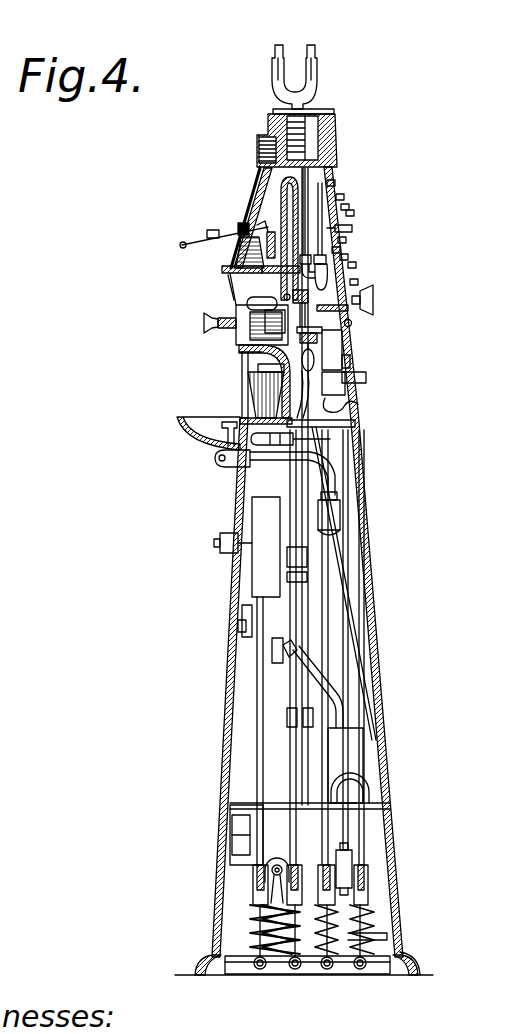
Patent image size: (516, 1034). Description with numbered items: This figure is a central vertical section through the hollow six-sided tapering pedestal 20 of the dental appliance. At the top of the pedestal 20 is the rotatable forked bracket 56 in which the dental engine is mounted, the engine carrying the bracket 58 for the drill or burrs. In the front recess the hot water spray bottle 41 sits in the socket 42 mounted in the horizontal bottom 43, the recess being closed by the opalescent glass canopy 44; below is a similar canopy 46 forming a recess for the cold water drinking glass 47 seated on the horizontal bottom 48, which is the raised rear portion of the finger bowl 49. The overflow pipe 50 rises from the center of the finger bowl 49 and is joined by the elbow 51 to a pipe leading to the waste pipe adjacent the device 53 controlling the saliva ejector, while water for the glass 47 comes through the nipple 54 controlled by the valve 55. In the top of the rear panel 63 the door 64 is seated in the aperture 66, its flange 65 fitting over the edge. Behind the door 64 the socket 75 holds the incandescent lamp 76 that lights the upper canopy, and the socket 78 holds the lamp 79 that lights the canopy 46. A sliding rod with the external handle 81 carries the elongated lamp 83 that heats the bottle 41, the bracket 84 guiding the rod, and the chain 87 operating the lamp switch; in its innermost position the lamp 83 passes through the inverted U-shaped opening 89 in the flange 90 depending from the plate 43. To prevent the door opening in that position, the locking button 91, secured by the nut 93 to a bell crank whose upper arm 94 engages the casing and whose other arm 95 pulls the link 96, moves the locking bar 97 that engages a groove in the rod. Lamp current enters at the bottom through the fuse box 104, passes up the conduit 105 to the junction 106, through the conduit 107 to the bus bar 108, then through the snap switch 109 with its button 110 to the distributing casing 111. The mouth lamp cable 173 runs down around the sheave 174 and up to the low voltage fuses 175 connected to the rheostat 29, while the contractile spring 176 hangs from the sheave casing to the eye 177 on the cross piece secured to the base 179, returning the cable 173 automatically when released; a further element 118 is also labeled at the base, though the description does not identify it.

The pedestal 20 is at (333, 162).
The rheostat 29 is at (228, 534).
The hot water spray bottle 41 is at (242, 247).
The socket 42 is at (237, 264).
The horizontal bottom 43 is at (230, 281).
The opalescent glass canopy 44 is at (282, 192).
The opalescent glass canopy 46 is at (275, 388).
The cold water drinking glass 47 is at (258, 373).
The horizontal bottom 48 is at (242, 404).
The finger bowl 49 is at (180, 430).
The overflow pipe 50 is at (222, 443).
The elbow 51 is at (232, 468).
The saliva ejector controlling device 53 is at (342, 513).
The nipple 54 is at (236, 336).
The valve 55 is at (204, 323).
The forked bracket 56 is at (318, 75).
The bracket 58 is at (320, 470).
The rear panel 63 is at (341, 197).
The door 64 is at (353, 265).
The flange 65 is at (351, 213).
The aperture 66 is at (346, 207).
The socket 75 is at (357, 282).
The incandescent lamp 76 is at (345, 275).
The socket 78 is at (262, 353).
The incandescent lamp 79 is at (300, 359).
The handle 81 is at (361, 294).
The incandescent lamp 83 is at (252, 301).
The bracket 84 is at (350, 312).
The chain 87 is at (352, 324).
The inverted U-shaped opening 89 is at (217, 285).
The flange 90 is at (250, 288).
The locking button 91 is at (352, 228).
The nut 93 is at (328, 228).
The upper arm 94 is at (334, 183).
The arm 95 is at (343, 240).
The link 96 is at (339, 250).
The locking bar 97 is at (344, 257).
The fuse box 104 is at (362, 742).
The conduit 105 is at (336, 700).
The junction 106 is at (283, 652).
The conduit 107 is at (300, 521).
The bus bar 108 is at (358, 402).
The snap switch 109 is at (350, 364).
The button 110 is at (366, 378).
The casing 111 is at (343, 350).
The bolt 118 is at (275, 975).
The cable 173 is at (335, 651).
The sheave 174 is at (333, 877).
The low voltage fuses 175 is at (240, 616).
The contractile spring 176 is at (315, 975).
The eye 177 is at (342, 975).
The base 179 is at (412, 968).